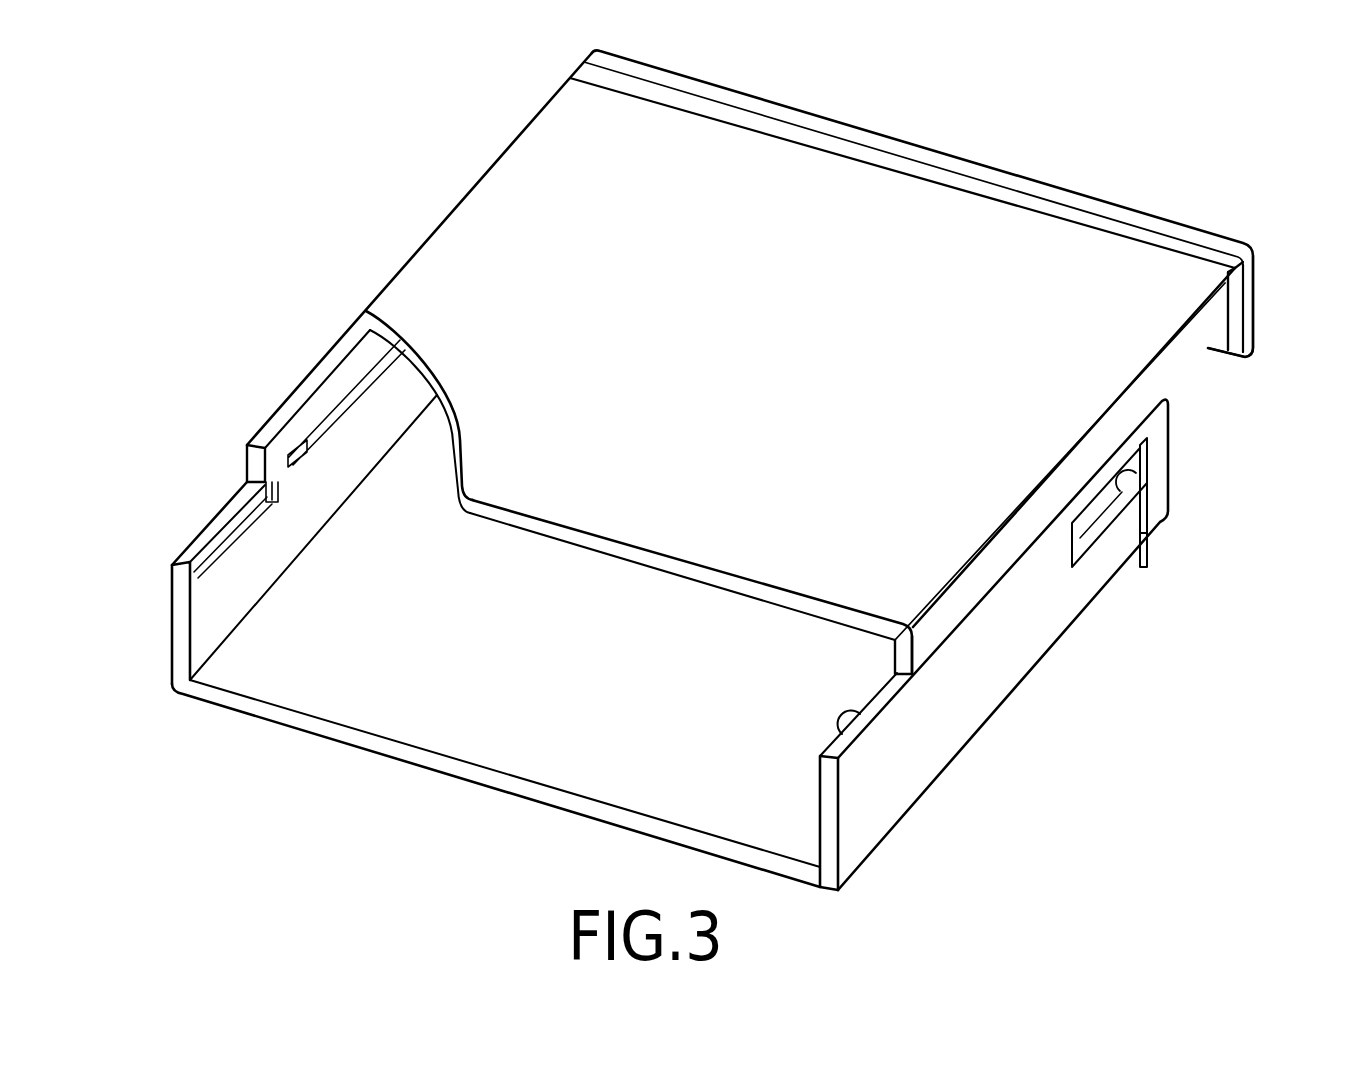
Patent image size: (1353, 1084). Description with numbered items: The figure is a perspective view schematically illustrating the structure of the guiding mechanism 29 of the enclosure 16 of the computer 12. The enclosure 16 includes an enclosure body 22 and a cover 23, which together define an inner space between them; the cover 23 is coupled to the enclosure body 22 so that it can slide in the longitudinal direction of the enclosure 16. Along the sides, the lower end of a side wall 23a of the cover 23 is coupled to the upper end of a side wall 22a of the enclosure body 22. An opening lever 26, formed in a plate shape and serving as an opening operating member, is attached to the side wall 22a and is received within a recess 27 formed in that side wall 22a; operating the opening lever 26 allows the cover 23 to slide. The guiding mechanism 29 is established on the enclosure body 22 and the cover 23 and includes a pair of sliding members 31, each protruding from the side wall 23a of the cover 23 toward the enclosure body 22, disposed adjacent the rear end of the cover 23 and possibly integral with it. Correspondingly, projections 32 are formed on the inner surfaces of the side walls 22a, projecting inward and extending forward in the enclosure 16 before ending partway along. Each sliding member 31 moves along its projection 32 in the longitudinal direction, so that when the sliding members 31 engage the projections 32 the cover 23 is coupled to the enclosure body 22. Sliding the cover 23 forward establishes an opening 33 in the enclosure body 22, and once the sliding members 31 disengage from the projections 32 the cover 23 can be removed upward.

The computer 12 is at (658, 558).
The enclosure 16 is at (736, 398).
The enclosure body 22 is at (1170, 454).
The side wall 22a is at (171, 652).
The cover 23 is at (1255, 310).
The side wall 23a is at (247, 460).
The opening lever 26 is at (1147, 533).
The recess 27 is at (1073, 540).
The guiding mechanism 29 is at (358, 596).
The sliding member 31 is at (278, 490).
The projection 32 is at (213, 546).
The opening 33 is at (604, 533).